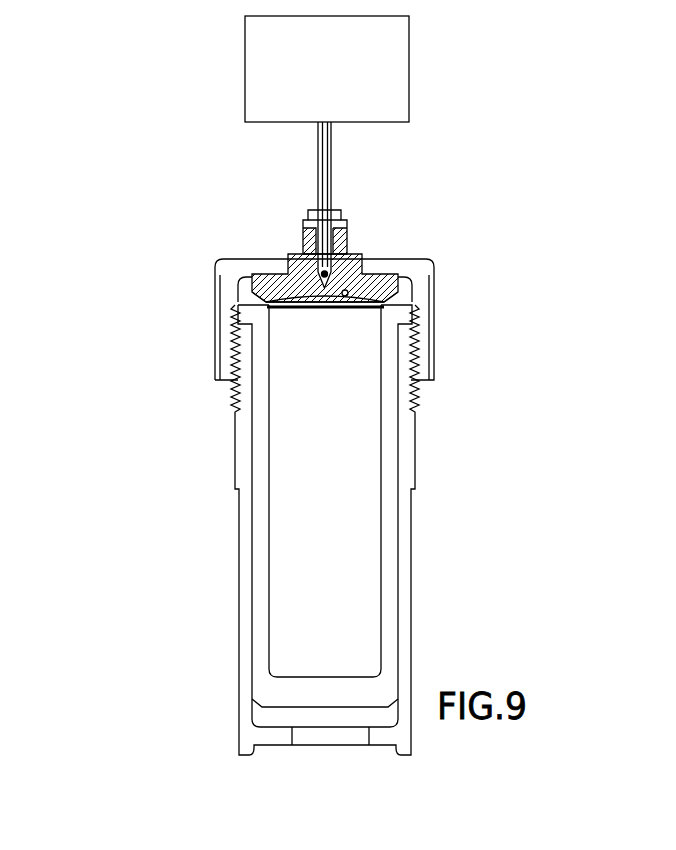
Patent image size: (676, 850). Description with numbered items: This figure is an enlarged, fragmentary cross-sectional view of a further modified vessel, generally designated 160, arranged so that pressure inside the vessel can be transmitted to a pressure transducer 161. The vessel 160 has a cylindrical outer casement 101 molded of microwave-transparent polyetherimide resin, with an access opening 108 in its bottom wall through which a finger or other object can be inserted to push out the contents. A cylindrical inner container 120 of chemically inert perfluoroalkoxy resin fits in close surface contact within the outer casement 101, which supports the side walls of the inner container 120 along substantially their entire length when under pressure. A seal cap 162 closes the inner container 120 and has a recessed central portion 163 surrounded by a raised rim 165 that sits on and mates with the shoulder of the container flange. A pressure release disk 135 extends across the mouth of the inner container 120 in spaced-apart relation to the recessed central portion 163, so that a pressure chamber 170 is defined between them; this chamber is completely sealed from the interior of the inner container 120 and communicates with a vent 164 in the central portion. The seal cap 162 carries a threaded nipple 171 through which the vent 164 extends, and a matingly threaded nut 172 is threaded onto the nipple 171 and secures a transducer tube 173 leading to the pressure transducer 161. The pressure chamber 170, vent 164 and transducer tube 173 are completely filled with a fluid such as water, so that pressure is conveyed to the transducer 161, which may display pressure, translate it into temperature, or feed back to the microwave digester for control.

The vessel 160 is at (76, 540).
The pressure transducer 161 is at (243, 31).
The nut 172 is at (304, 209).
The transducer tube 173 is at (329, 182).
The threaded nipple 171 is at (311, 236).
The vent 164 is at (320, 271).
The recessed central portion 163 is at (353, 254).
The seal cap 162 is at (362, 258).
The pressure chamber 170 is at (296, 296).
The raised rim 165 is at (383, 297).
The pressure release disk 135 is at (327, 307).
The inner container 120 is at (397, 529).
The outer casement 101 is at (408, 604).
The access opening 108 is at (364, 732).